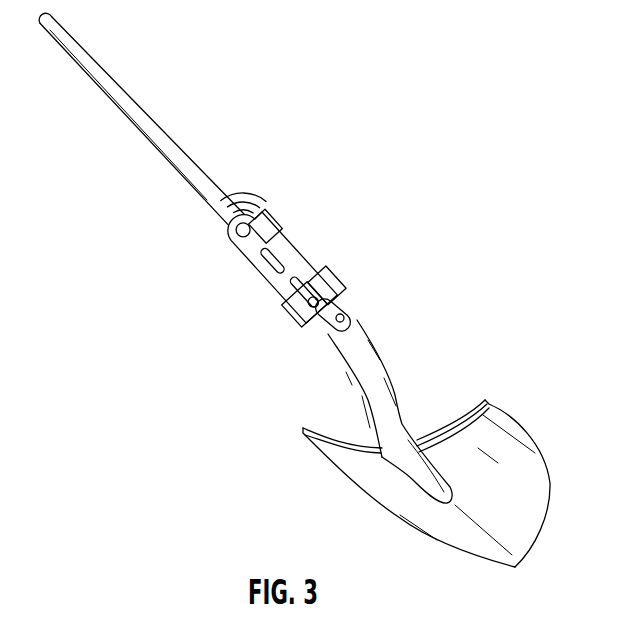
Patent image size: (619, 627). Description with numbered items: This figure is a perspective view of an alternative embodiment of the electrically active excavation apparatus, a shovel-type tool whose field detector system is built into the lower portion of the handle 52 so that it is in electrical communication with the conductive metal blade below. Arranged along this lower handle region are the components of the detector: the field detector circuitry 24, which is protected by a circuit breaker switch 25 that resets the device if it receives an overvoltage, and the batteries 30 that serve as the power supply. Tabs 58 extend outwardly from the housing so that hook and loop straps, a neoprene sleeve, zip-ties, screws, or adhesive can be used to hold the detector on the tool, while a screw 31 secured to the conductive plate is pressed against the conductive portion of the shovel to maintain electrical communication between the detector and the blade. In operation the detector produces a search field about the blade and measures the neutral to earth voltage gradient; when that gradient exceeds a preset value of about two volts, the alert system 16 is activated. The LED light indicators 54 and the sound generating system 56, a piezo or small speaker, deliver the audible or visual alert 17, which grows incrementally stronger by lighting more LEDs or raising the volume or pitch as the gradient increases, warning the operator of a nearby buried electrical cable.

The alert system 16 is at (225, 238).
The audible or visual alert 17 is at (249, 187).
The field detector circuitry 24 is at (286, 259).
The circuit breaker switch 25 is at (280, 217).
The batteries 30 is at (333, 273).
The screw 31 is at (345, 318).
The lower portion of the handle 52 is at (333, 348).
The LED light indicators 54 is at (263, 270).
The sound generating system 56 is at (340, 290).
The tabs 58 is at (281, 318).